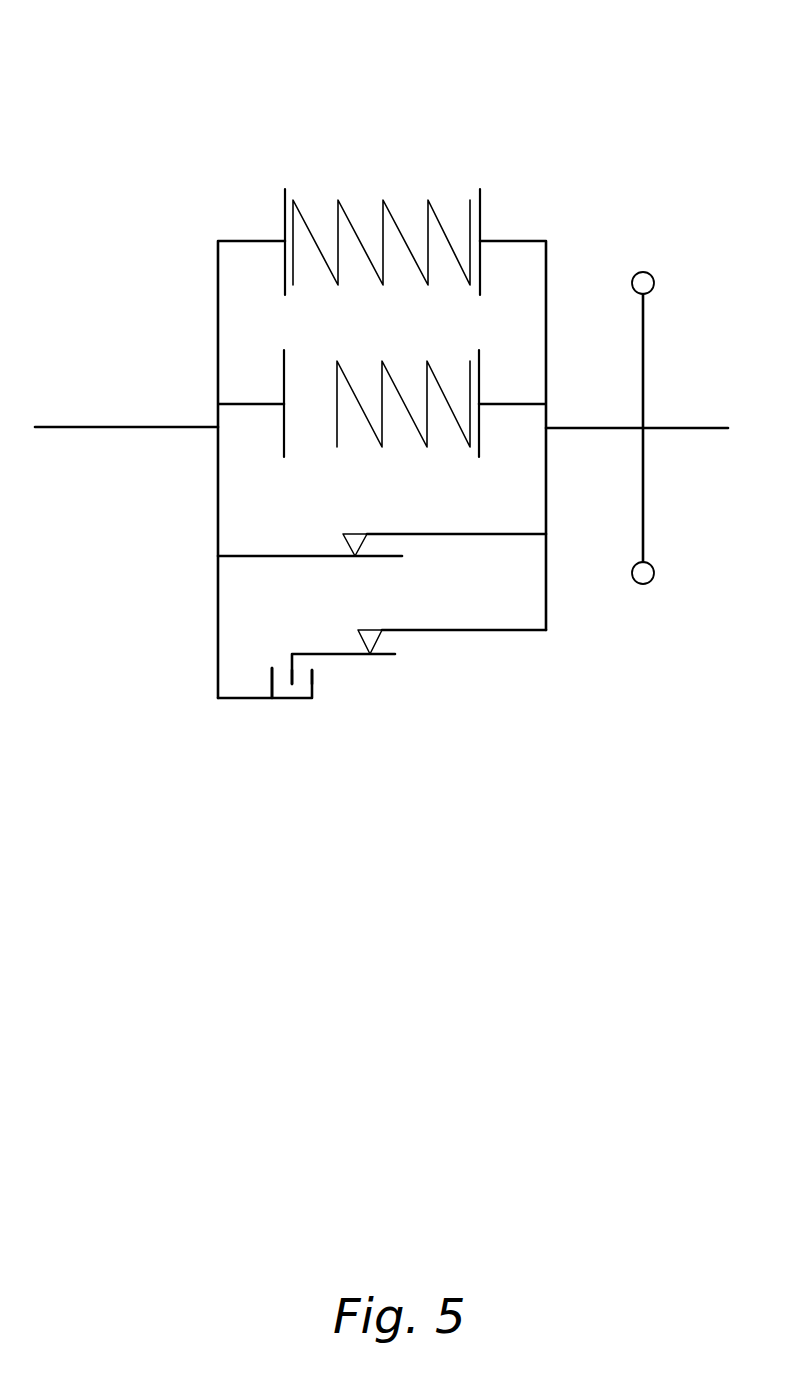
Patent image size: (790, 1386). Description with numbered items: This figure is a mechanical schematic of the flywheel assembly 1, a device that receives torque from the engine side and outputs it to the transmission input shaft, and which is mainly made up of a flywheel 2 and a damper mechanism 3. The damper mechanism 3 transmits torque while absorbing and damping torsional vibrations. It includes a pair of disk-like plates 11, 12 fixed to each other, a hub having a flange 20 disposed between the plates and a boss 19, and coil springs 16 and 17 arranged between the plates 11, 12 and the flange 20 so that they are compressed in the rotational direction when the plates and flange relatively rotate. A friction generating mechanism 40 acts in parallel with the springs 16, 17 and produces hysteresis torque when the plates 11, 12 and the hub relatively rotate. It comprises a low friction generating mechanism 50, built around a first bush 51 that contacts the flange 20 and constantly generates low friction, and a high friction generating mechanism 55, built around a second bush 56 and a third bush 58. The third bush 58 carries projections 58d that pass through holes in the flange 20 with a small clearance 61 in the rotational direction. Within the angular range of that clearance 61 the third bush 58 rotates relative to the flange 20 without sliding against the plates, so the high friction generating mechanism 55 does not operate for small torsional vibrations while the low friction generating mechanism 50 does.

The flywheel assembly 1 is at (606, 138).
The flywheel 2 is at (645, 363).
The damper mechanism 3 is at (442, 168).
The disk-like plate 11 is at (637, 317).
The disk-like plate 12 is at (580, 425).
The coil spring 16 is at (352, 222).
The coil spring 17 is at (347, 372).
The boss 19 is at (70, 426).
The flange 20 is at (218, 283).
The friction generating mechanism 40 is at (381, 767).
The low friction generating mechanism 50 is at (335, 512).
The first bush 51 is at (418, 534).
The high friction generating mechanism 55 is at (382, 689).
The second bush 56 is at (430, 630).
The third bush 58 is at (320, 652).
The projection 58d is at (291, 664).
The small clearance 61 is at (302, 683).